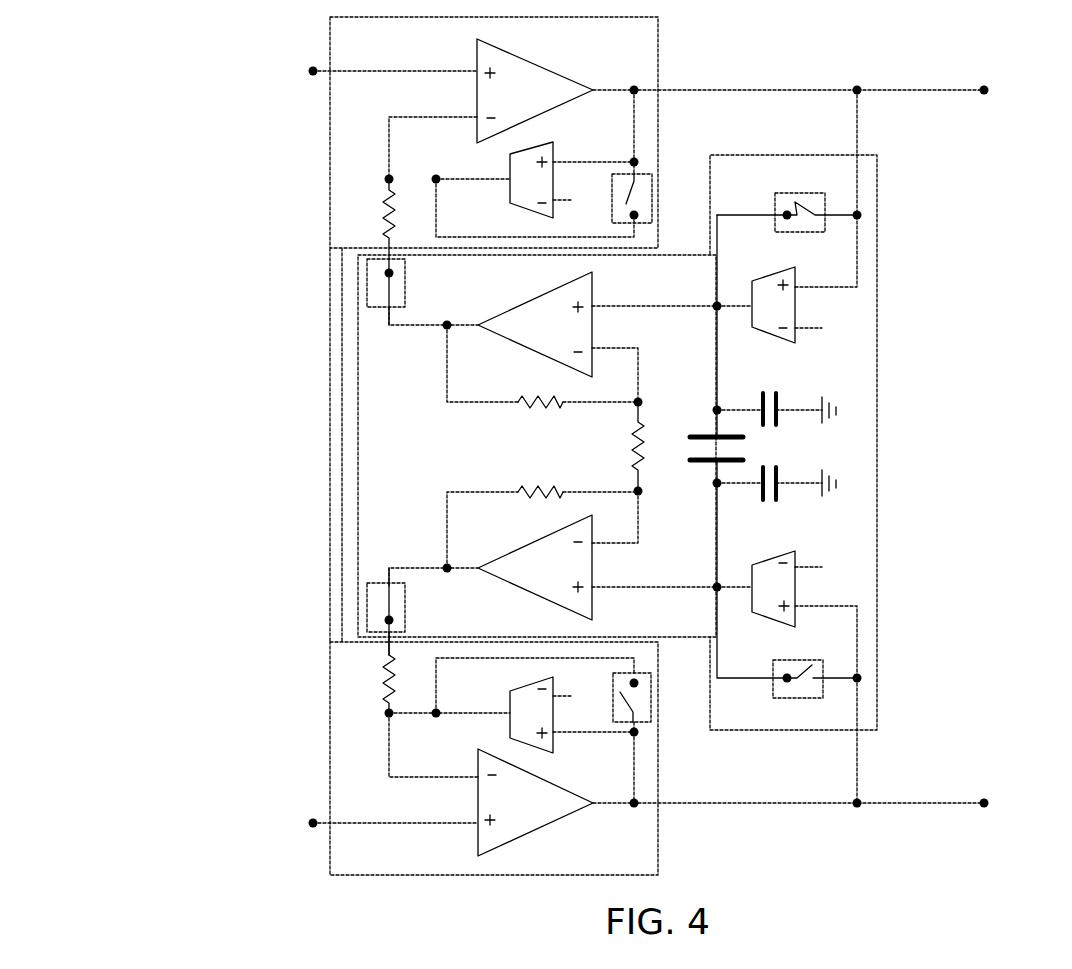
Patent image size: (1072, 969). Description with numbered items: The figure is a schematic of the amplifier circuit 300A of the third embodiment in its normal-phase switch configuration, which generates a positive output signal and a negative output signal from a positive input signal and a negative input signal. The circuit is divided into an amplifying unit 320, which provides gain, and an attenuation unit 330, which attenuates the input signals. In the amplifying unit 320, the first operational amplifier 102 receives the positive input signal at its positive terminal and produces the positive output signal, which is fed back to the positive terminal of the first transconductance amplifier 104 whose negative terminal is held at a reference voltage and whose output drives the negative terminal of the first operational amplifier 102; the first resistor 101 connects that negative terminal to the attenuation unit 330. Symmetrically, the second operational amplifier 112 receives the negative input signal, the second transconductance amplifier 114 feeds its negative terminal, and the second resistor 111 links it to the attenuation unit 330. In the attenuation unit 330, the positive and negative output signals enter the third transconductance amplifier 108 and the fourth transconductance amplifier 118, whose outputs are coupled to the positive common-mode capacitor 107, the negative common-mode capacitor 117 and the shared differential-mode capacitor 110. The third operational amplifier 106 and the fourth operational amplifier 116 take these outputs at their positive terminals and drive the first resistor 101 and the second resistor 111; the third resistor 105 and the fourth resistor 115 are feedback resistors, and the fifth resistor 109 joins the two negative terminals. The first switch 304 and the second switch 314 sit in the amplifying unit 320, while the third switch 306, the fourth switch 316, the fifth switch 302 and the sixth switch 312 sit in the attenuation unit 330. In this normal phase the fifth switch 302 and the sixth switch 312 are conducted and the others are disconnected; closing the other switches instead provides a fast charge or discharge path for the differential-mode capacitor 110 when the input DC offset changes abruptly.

The amplifier circuit 300A is at (536, 446).
The first resistor 101 is at (367, 217).
The first operational amplifier 102 is at (550, 104).
The first transconductance amplifier 104 is at (552, 194).
The third resistor 105 is at (545, 366).
The third operational amplifier 106 is at (568, 342).
The positive common-mode capacitor 107 is at (775, 397).
The third transconductance amplifier 108 is at (794, 322).
The fifth resistor 109 is at (621, 449).
The differential-mode capacitor 110 is at (708, 437).
The second resistor 111 is at (367, 675).
The second operational amplifier 112 is at (550, 820).
The second transconductance amplifier 114 is at (552, 725).
The fourth resistor 115 is at (542, 527).
The fourth operational amplifier 116 is at (568, 585).
The negative common-mode capacitor 117 is at (775, 499).
The fourth transconductance amplifier 118 is at (794, 598).
The fifth switch 302 is at (405, 283).
The first switch 304 is at (652, 202).
The third switch 306 is at (806, 193).
The sixth switch 312 is at (405, 606).
The second switch 314 is at (651, 686).
The fourth switch 316 is at (802, 698).
The amplifying unit 320 is at (330, 168).
The attenuation unit 330 is at (877, 366).